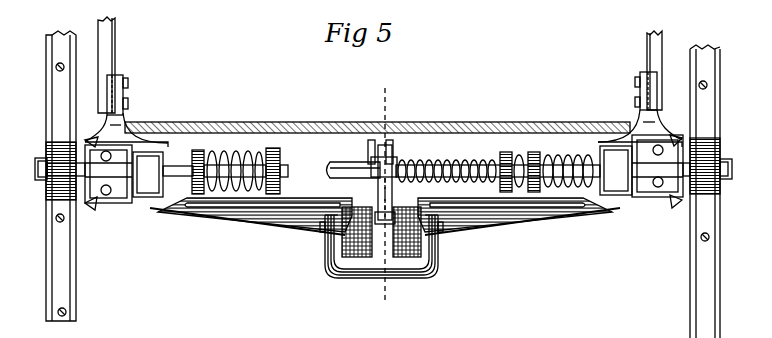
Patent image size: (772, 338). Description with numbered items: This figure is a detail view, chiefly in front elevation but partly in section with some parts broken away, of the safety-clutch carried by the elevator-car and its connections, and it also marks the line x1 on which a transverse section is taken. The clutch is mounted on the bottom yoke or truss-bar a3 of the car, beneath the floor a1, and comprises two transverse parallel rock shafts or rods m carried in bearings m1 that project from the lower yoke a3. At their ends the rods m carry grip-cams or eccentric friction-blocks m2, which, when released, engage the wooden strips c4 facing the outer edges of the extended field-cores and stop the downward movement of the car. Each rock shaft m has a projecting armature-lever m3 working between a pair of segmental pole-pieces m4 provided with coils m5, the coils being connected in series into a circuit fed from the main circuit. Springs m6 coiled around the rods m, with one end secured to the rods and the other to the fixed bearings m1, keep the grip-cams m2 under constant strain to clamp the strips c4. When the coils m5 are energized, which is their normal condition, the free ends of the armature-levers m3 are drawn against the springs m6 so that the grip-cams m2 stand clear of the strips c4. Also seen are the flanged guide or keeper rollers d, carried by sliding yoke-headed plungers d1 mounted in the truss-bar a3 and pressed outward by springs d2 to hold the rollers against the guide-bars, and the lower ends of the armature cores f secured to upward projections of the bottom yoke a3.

The wooden strips c4 is at (63, 283).
The grip-cams or eccentric friction-blocks m2 is at (46, 181).
The soft-iron bar or core f is at (104, 61).
The flanged guide or keeper rollers d is at (93, 192).
The bearings m1 is at (113, 205).
The floor a1 is at (283, 128).
The sliding yoke-headed plungers d1 is at (211, 151).
The springs d2 is at (248, 150).
The springs m6 is at (440, 160).
The rock shafts or rods m is at (334, 163).
The segmental pole-pieces m4 is at (368, 148).
The armature-lever m3 is at (379, 193).
The bottom yoke or truss-bar a3 is at (293, 207).
The coils m5 is at (348, 240).
The section line x1 is at (383, 92).